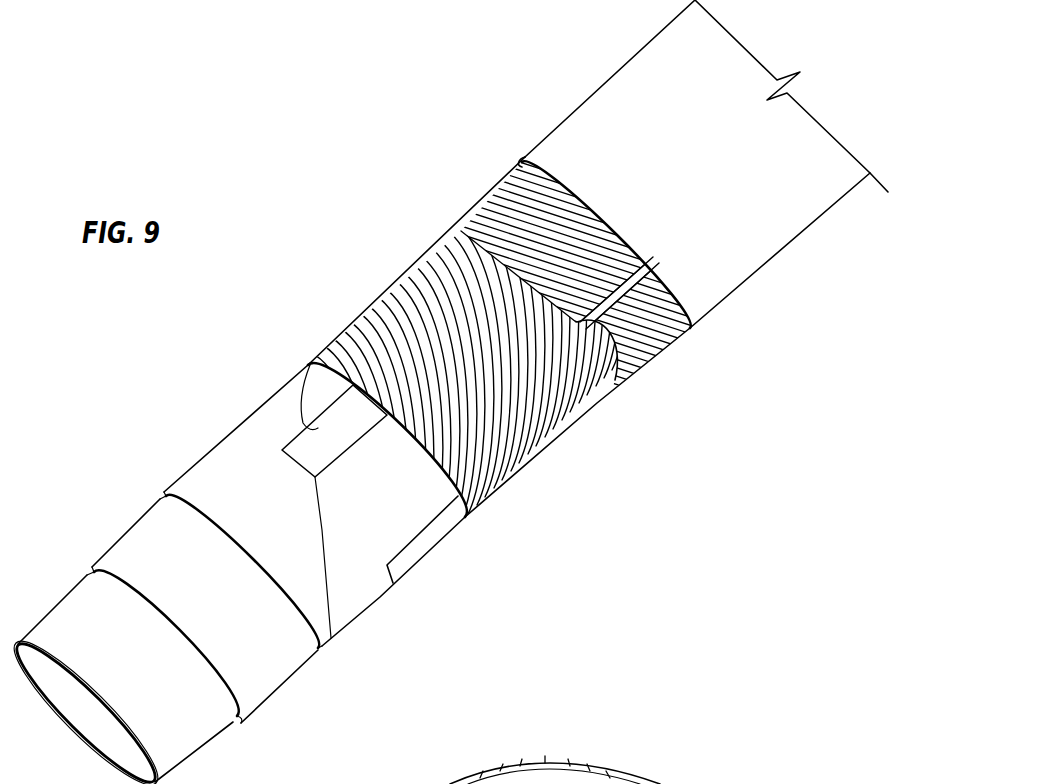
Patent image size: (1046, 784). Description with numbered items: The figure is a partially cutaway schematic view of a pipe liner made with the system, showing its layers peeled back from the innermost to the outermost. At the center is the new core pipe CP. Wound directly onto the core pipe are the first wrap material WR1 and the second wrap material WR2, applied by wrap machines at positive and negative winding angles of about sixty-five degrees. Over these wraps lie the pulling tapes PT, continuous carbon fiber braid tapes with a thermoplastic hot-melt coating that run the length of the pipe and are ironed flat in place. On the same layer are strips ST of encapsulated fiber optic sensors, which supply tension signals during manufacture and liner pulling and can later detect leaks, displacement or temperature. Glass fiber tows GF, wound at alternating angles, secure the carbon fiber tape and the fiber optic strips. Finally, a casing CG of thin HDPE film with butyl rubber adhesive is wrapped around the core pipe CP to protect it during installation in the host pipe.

The core pipe CP is at (183, 743).
The Wrap 1 material WR1 is at (258, 677).
The Wrap 2 material WR2 is at (347, 608).
The pulling tape PT is at (318, 428).
The glass fiber tow GF is at (655, 343).
The strip of encapsulated fiber optic sensors ST is at (612, 383).
The casing CG is at (742, 260).